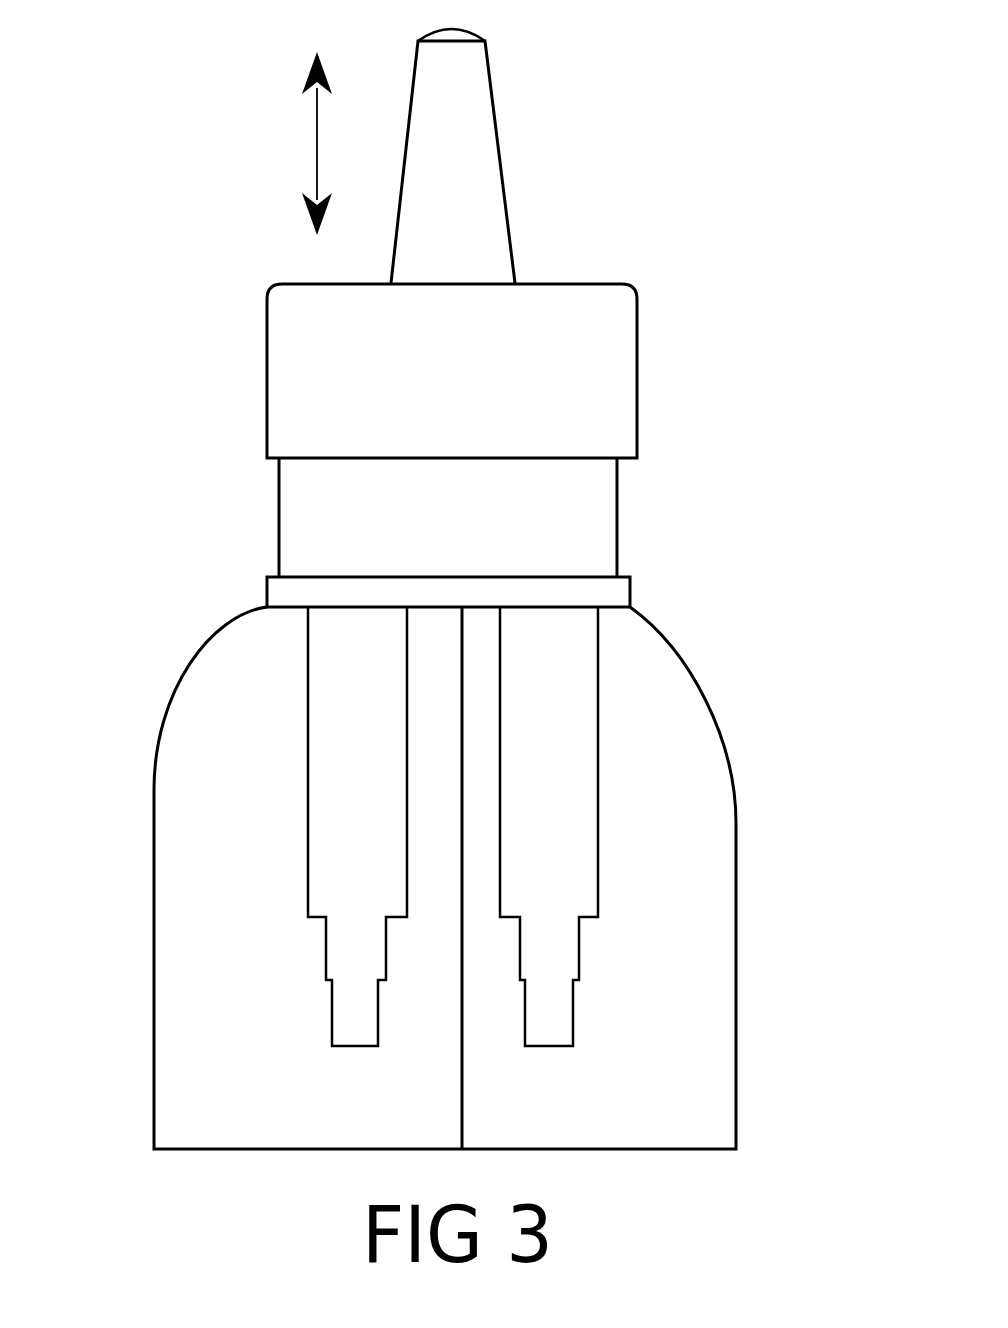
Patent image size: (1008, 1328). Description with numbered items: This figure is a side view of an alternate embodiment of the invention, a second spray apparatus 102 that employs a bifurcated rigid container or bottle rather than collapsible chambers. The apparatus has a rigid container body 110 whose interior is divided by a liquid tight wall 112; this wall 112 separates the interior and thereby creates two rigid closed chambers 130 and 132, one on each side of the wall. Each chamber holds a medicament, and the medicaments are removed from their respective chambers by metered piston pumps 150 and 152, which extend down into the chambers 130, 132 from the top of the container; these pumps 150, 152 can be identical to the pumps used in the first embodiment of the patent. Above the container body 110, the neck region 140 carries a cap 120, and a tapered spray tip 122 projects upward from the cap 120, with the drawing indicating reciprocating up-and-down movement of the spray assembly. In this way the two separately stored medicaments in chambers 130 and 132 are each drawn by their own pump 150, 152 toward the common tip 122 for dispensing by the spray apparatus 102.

The second spray apparatus 102 is at (250, 234).
The nozzle tip 122 is at (498, 188).
The cap 120 is at (600, 364).
The neck / collar 140 is at (282, 506).
The container body 110 is at (727, 721).
The liquid tight wall 112 is at (462, 1107).
The metered pump 150 is at (343, 823).
The metered pump 152 is at (575, 870).
The rigid closed chamber 130 is at (225, 934).
The rigid closed chamber 132 is at (688, 1050).